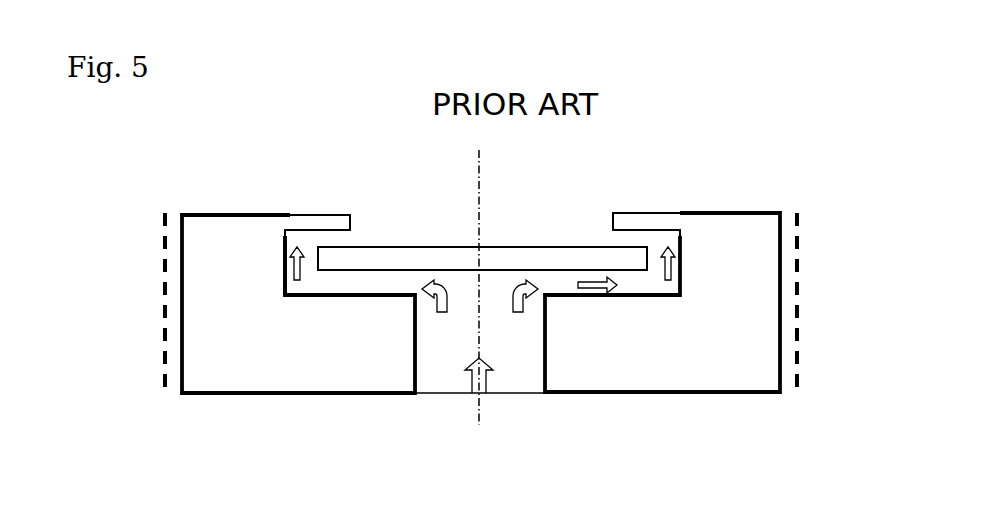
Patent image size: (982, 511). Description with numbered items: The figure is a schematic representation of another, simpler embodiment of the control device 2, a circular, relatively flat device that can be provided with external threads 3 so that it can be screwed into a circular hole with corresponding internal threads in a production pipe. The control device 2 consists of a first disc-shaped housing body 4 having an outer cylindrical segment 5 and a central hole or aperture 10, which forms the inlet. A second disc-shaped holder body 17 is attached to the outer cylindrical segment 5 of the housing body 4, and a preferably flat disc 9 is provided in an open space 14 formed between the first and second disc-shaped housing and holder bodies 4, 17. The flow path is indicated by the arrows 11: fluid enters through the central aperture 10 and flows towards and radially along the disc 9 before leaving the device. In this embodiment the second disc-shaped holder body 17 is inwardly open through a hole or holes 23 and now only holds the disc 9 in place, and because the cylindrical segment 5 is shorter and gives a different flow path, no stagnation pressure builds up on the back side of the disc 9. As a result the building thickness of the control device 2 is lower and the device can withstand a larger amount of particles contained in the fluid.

The control device 2 is at (268, 410).
The external threads 3 is at (795, 222).
The first disc-shaped housing body 4 is at (617, 338).
The outer cylindrical segment 5 is at (763, 280).
The disc 9 is at (463, 263).
The central hole or aperture 10 is at (447, 328).
The arrows 11 is at (479, 393).
The open space 14 is at (312, 262).
The second disc-shaped holder body 17 is at (320, 215).
The hole 23 is at (538, 222).